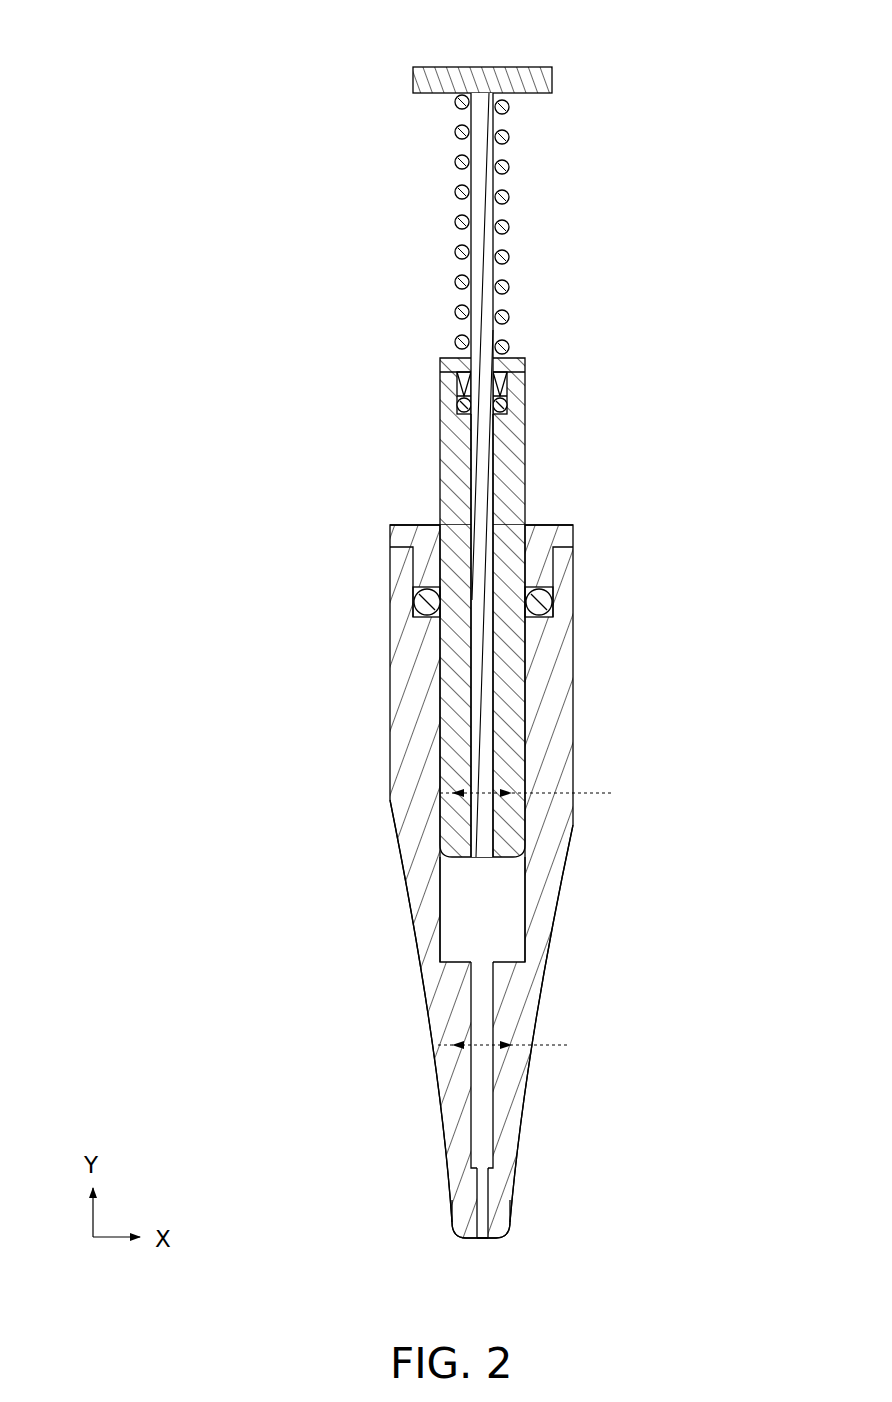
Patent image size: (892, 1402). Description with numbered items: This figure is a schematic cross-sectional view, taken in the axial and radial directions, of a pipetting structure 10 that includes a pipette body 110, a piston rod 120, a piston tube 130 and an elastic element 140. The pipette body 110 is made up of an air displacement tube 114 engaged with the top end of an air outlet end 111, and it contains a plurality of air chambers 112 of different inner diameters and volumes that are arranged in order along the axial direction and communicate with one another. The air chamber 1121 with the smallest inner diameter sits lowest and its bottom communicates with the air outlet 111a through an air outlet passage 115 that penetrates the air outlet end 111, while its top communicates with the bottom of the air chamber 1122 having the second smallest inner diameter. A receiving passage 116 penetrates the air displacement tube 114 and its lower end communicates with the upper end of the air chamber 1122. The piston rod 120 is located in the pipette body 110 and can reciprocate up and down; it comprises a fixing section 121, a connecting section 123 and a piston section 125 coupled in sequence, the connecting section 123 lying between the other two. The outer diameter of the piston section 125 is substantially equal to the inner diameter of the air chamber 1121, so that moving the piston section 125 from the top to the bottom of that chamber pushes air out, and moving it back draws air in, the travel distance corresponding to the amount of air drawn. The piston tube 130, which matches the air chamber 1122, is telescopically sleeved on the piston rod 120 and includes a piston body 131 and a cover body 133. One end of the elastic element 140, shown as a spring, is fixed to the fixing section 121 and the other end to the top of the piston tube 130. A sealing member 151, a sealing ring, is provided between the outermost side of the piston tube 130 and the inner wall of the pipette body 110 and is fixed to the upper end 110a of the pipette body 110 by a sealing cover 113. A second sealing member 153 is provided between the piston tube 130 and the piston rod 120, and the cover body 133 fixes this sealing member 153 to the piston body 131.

The pipetting structure 10 is at (278, 80).
The pipette body 110 is at (733, 280).
The upper end of the pipette body 110a is at (388, 549).
The air outlet end 111 is at (468, 1210).
The air outlet 111a is at (486, 1240).
The air chambers 112 is at (322, 895).
The air chamber with the smallest inner diameter 1121 is at (477, 1000).
The air chamber with the second smallest inner diameter 1122 is at (455, 935).
The sealing cover 113 is at (395, 527).
The air displacement tube 114 is at (418, 816).
The air outlet passage 115 is at (477, 1178).
The receiving passage 116 is at (436, 663).
The piston rod 120 is at (733, 455).
The fixing section 121 is at (487, 66).
The connecting section 123 is at (503, 490).
The piston section 125 is at (480, 675).
The piston tube 130 is at (372, 352).
The piston body 131 is at (445, 462).
The cover body 133 is at (448, 372).
The elastic element 140 is at (454, 160).
The sealing member 151 is at (560, 598).
The sealing member 153 is at (518, 405).